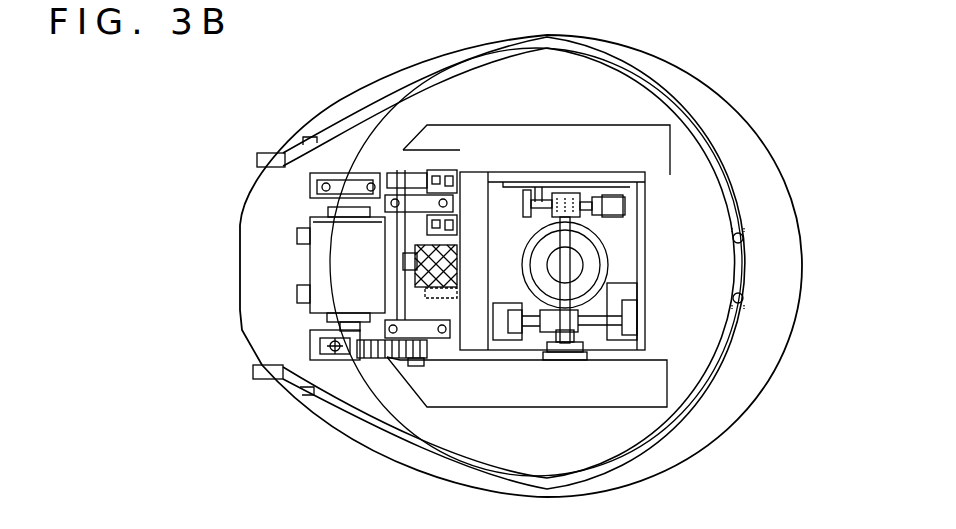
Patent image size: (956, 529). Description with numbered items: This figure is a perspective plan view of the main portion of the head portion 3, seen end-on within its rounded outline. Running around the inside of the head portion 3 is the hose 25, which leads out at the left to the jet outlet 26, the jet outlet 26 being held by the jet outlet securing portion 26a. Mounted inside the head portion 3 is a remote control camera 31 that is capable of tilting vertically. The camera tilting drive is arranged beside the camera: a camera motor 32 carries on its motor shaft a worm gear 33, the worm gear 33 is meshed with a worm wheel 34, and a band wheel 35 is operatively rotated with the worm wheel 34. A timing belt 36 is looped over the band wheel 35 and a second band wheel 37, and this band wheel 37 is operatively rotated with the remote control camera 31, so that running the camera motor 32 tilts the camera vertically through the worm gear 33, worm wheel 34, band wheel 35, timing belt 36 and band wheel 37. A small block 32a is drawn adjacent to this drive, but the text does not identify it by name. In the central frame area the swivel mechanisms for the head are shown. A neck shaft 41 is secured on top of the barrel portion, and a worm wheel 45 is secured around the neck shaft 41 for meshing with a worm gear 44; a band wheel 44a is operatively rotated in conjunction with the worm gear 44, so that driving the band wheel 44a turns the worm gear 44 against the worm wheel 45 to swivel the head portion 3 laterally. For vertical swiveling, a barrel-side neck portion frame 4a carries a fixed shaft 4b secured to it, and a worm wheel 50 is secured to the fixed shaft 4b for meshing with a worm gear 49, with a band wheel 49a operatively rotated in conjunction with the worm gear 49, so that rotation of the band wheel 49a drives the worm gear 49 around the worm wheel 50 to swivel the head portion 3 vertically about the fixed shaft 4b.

The head portion 3 is at (810, 192).
The hose 25 is at (603, 480).
The jet outlet 26 is at (257, 160).
The jet outlet securing portion 26a is at (305, 140).
The remote control camera 31 is at (317, 262).
The camera motor 32 is at (415, 262).
The guide block 32a is at (405, 215).
The worm gear 33 is at (313, 180).
The worm wheel 34 is at (427, 193).
The band wheel 35 is at (425, 361).
The timing belt 36 is at (388, 353).
The band wheel 37 is at (350, 350).
The neck shaft 41 is at (597, 262).
The worm gear 44 is at (575, 320).
The band wheel 44a is at (618, 317).
The worm wheel 45 is at (608, 272).
The worm gear 49 is at (600, 195).
The band wheel 49a is at (615, 200).
The worm wheel 50 is at (583, 190).
The barrel-side neck portion frame 4a is at (577, 360).
The fixed shaft 4b is at (580, 328).